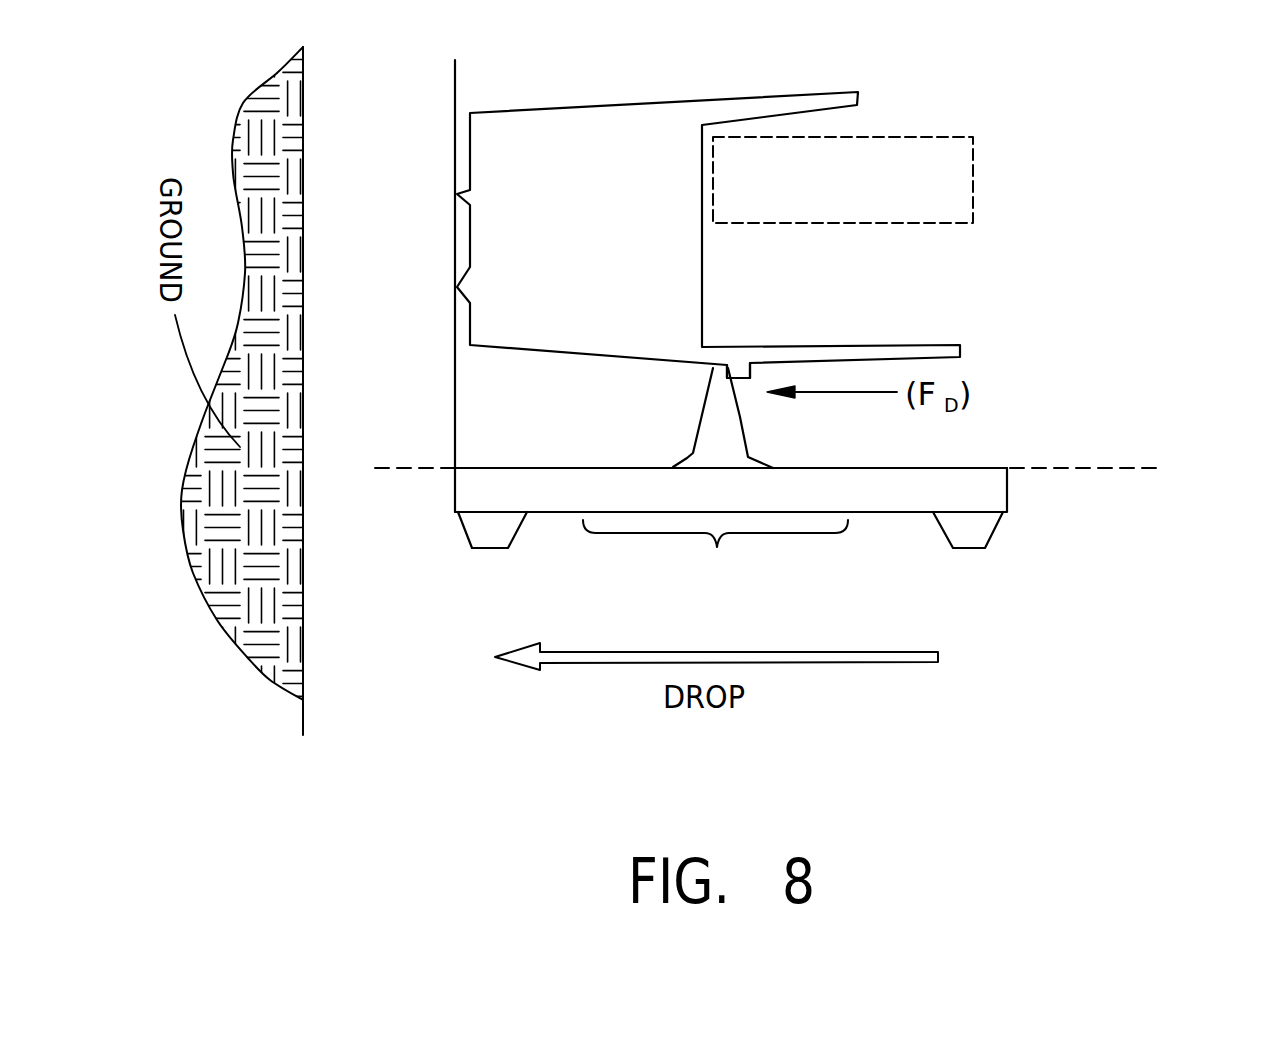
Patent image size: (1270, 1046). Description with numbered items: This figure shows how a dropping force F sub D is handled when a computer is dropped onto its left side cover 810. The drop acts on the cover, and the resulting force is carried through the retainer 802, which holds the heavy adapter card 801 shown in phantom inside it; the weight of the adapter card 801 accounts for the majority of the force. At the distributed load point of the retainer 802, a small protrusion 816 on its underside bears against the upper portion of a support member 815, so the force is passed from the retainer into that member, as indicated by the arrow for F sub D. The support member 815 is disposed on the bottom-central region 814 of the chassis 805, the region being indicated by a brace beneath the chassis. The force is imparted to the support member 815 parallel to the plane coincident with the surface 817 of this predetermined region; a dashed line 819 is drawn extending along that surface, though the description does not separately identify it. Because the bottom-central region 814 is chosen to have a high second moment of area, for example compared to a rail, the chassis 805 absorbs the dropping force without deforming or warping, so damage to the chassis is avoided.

The adapter card 801 is at (873, 193).
The retainer 802 is at (613, 237).
The chassis 805 is at (990, 490).
The left side cover 810 is at (455, 148).
The bottom-central region 814 is at (715, 556).
The support member 815 is at (747, 442).
The protrusion 816 is at (740, 367).
The surface 817 is at (960, 468).
The reference plane 819 is at (1087, 468).